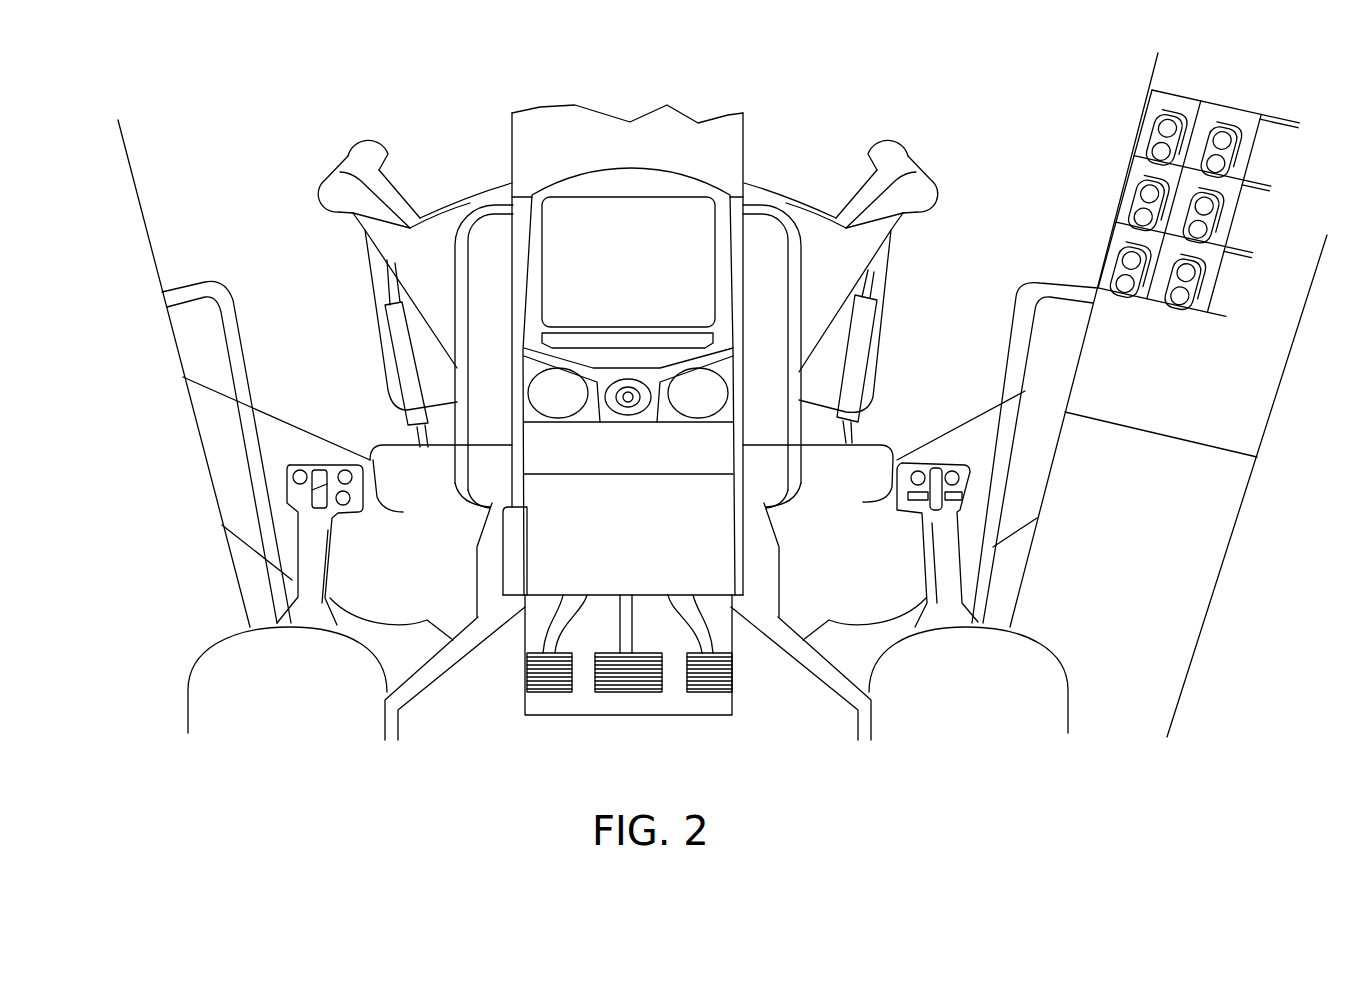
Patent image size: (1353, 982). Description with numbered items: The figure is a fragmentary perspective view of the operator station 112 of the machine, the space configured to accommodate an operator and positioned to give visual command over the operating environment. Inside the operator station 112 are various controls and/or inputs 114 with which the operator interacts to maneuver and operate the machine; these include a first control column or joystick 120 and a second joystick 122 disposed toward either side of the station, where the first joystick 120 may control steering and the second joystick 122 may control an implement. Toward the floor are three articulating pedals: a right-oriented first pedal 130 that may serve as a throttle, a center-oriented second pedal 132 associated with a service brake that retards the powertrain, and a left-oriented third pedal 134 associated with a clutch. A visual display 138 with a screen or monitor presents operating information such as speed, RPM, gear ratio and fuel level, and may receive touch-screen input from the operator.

The operator station 112 is at (968, 190).
The controls and/or inputs 114 is at (1122, 80).
The first joystick 120 is at (313, 540).
The second joystick 122 is at (957, 548).
The first pedal 130 is at (728, 677).
The second pedal 132 is at (623, 668).
The third pedal 134 is at (533, 668).
The visual display 138 is at (638, 187).